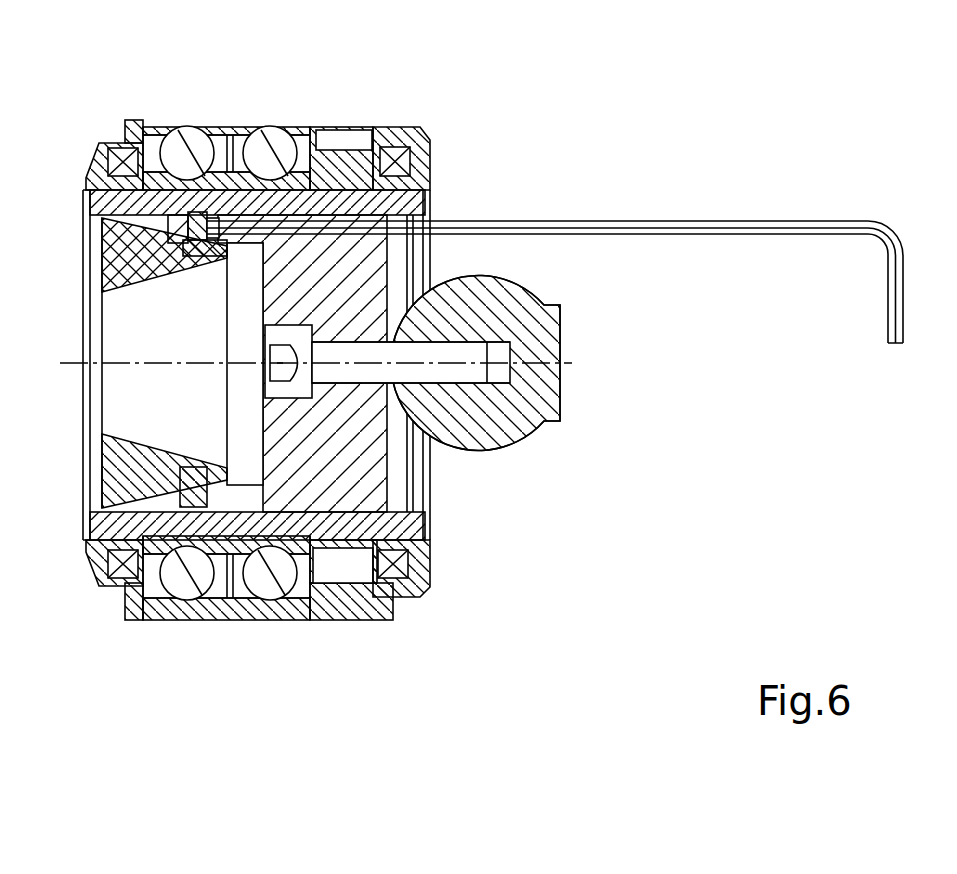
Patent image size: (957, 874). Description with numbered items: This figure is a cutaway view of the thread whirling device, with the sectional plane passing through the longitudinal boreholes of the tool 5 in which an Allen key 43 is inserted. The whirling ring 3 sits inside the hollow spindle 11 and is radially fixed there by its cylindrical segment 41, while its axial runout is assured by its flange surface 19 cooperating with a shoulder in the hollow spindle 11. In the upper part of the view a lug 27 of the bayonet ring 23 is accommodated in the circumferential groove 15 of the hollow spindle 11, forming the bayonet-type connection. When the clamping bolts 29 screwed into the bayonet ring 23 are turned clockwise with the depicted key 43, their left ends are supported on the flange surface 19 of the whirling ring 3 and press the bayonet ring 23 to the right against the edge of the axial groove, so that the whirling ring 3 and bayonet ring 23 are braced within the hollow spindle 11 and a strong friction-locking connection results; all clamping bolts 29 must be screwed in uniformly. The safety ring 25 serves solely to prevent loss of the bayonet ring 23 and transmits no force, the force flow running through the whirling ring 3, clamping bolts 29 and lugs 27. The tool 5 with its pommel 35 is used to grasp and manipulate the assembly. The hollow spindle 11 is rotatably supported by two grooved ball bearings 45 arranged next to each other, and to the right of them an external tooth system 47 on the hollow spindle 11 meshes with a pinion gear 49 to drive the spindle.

The whirling ring 3 is at (103, 140).
The tool 5 is at (358, 467).
The hollow spindle 11 is at (338, 188).
The circumferential groove 15 is at (195, 210).
The flange surface 19 is at (178, 212).
The bayonet ring 23 is at (186, 258).
The safety ring 25 is at (150, 281).
The lug 27 is at (210, 218).
The clamping bolt 29 is at (188, 236).
The pommel 35 is at (520, 432).
The cylindrical segment 41 is at (151, 128).
The key 43 is at (515, 221).
The grooved ball bearing 45 is at (272, 150).
The external tooth system 47 is at (422, 140).
The pinion gear 49 is at (358, 140).